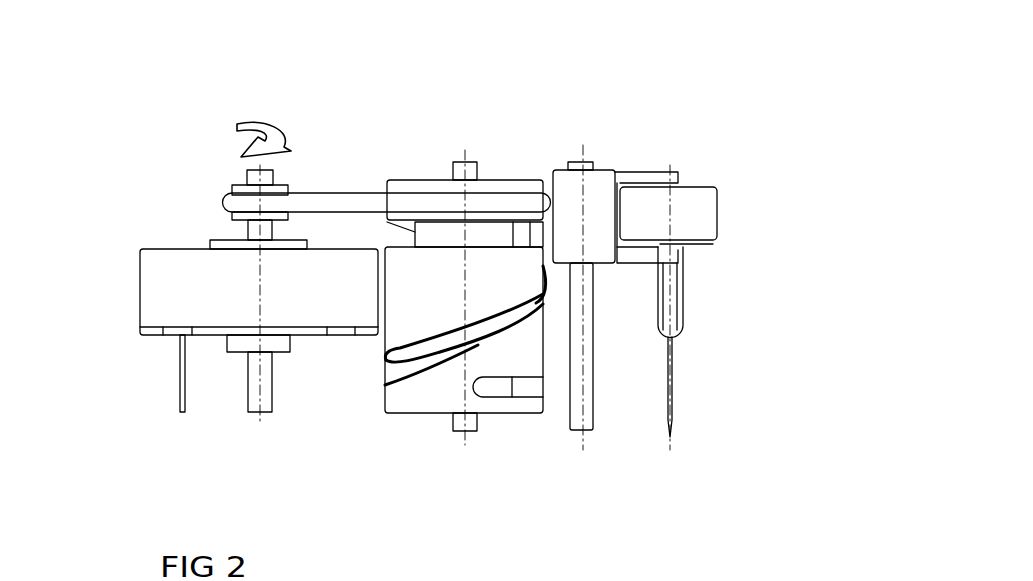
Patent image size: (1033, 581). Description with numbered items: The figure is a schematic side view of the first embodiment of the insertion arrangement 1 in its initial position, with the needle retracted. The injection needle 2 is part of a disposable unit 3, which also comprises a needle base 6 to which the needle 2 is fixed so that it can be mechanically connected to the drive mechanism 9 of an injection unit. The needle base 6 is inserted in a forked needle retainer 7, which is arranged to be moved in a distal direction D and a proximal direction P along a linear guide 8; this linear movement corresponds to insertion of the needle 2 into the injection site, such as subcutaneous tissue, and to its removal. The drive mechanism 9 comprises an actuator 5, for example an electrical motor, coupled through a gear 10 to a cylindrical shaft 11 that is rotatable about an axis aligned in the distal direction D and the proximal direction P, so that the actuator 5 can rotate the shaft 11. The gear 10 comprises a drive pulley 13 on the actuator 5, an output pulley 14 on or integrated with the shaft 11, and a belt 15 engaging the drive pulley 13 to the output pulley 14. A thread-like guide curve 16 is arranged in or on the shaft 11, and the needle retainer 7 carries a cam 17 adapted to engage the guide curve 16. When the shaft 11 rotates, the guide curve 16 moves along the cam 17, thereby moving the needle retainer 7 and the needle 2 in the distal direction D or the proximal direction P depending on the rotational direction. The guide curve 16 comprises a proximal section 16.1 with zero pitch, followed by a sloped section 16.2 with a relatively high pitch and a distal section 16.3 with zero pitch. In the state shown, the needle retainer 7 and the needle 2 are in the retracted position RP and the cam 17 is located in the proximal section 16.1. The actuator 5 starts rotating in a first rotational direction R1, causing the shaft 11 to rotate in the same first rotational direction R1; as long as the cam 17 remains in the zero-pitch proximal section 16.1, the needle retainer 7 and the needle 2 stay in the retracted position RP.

The insertion arrangement 1 is at (163, 118).
The injection needle 2 is at (673, 398).
The disposable unit 3 is at (716, 307).
The actuator 5 is at (170, 262).
The needle base 6 is at (700, 212).
The needle retainer 7 is at (603, 177).
The linear guide 8 is at (588, 431).
The drive mechanism 9 is at (308, 432).
The gear 10 is at (442, 92).
The cylindrical shaft 11 is at (450, 378).
The drive pulley 13 is at (275, 186).
The output pulley 14 is at (393, 186).
The belt 15 is at (357, 190).
The guide curve 16 is at (439, 286).
The proximal section 16.1 is at (440, 226).
The sloped section 16.2 is at (435, 337).
The distal section 16.3 is at (498, 399).
The cam 17 is at (537, 225).
The first rotational direction R1 is at (248, 139).
The retracted position RP is at (716, 243).
The proximal direction P is at (468, 25).
The distal direction D is at (462, 527).